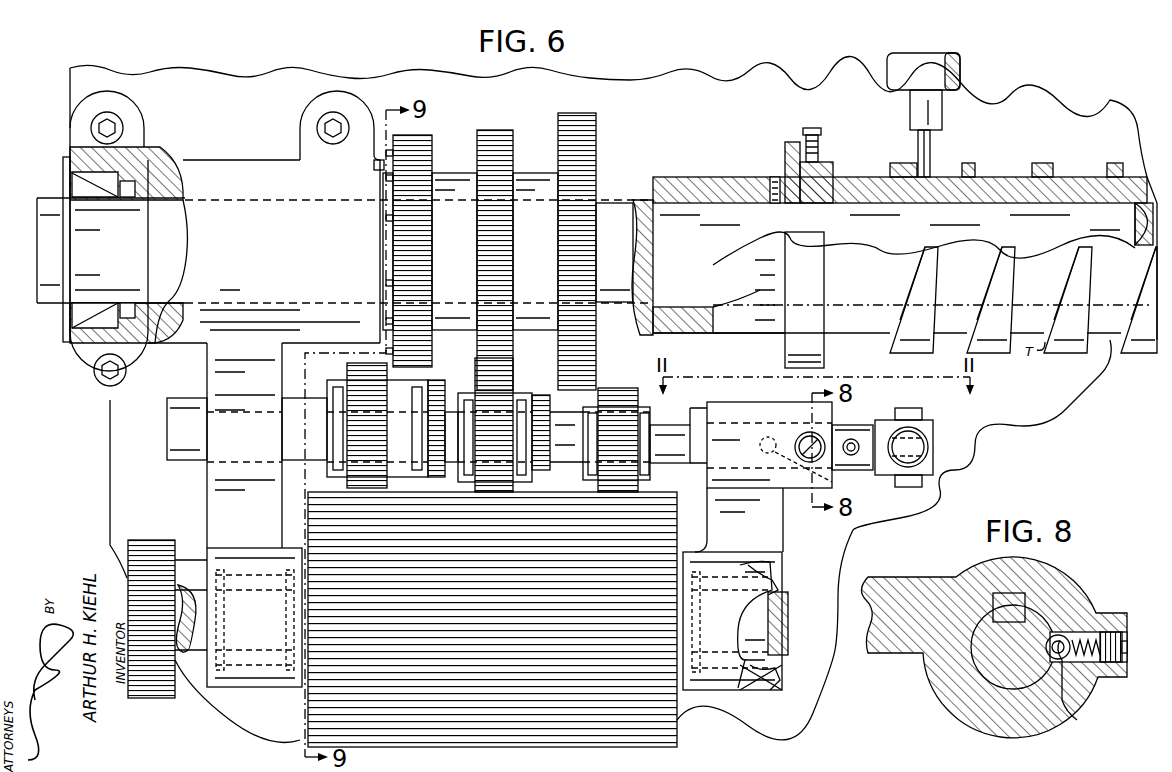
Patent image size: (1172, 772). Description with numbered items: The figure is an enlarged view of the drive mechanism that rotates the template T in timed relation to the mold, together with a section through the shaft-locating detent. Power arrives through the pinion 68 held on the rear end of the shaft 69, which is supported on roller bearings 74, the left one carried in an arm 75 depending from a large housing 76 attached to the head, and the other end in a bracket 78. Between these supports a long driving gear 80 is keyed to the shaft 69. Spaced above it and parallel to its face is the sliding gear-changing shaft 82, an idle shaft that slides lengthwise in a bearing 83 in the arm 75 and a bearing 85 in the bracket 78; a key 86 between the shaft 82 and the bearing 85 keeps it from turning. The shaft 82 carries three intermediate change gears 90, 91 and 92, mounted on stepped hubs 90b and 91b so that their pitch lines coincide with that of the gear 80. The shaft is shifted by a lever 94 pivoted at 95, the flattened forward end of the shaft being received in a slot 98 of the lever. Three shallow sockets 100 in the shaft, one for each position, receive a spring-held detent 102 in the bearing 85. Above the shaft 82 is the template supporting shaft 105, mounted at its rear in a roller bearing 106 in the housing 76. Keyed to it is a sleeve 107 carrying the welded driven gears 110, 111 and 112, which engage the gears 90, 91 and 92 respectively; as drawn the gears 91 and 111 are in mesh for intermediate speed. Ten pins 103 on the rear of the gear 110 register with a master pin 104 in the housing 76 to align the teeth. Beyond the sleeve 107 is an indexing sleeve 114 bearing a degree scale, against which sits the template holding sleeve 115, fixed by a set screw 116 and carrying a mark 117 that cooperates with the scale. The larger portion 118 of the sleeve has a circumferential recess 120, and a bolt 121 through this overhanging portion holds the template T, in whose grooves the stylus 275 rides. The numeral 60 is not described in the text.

In FIG. 6, the housing 60 is at (250, 84).
In FIG. 6, the roller bearing 106 is at (75, 182).
In FIG. 6, the housing 76 is at (256, 170).
In FIG. 6, the master pin 104 is at (378, 152).
In FIG. 6, the pins 103 is at (405, 200).
In FIG. 6, the sleeve 107 is at (526, 178).
In FIG. 6, the driven gear 110 is at (432, 352).
In FIG. 6, the driven gear 111 is at (513, 353).
In FIG. 6, the driven gear 112 is at (596, 353).
In FIG. 6, the template supporting shaft 105 is at (645, 300).
In FIG. 6, the indexing sleeve 114 is at (705, 180).
In FIG. 6, the set screw 116 is at (775, 180).
In FIG. 6, the circumferential recess 120 is at (790, 146).
In FIG. 6, the larger portion 118 is at (826, 160).
In FIG. 6, the bolt 121 is at (812, 127).
In FIG. 6, the mark 117 is at (773, 248).
In FIG. 6, the template holding sleeve 115 is at (824, 362).
In FIG. 6, the stylus 275 is at (936, 142).
In FIG. 6, the bearing 83 is at (205, 460).
In FIG. 6, the arm 75 is at (207, 510).
In FIG. 6, the intermediate change gear 90 is at (347, 374).
In FIG. 6, the hub 90b is at (440, 400).
In FIG. 6, the intermediate change gear 91 is at (512, 398).
In FIG. 6, the hub 91b is at (568, 404).
In FIG. 6, the intermediate change gear 92 is at (614, 398).
In FIG. 6, the sliding gear-changing shaft 82 is at (694, 468).
In FIG. 8, the sliding gear-changing shaft 82 is at (975, 654).
In FIG. 6, the bearing 85 is at (748, 425).
In FIG. 8, the bearing 85 is at (1048, 625).
In FIG. 6, the key 86 is at (835, 426).
In FIG. 8, the key 86 is at (1020, 598).
In FIG. 6, the sockets 100 is at (851, 456).
In FIG. 8, the sockets 100 is at (1062, 638).
In FIG. 6, the slot 98 is at (934, 430).
In FIG. 6, the lever 94 is at (928, 447).
In FIG. 6, the pivot 95 is at (906, 410).
In FIG. 6, the driving gear 80 is at (310, 516).
In FIG. 6, the bracket 78 is at (776, 530).
In FIG. 8, the bracket 78 is at (946, 703).
In FIG. 6, the roller bearings 74 is at (210, 668).
In FIG. 6, the shaft 69 is at (186, 596).
In FIG. 6, the pinion 68 is at (145, 542).
In FIG. 8, the spring-held detent 102 is at (1070, 715).